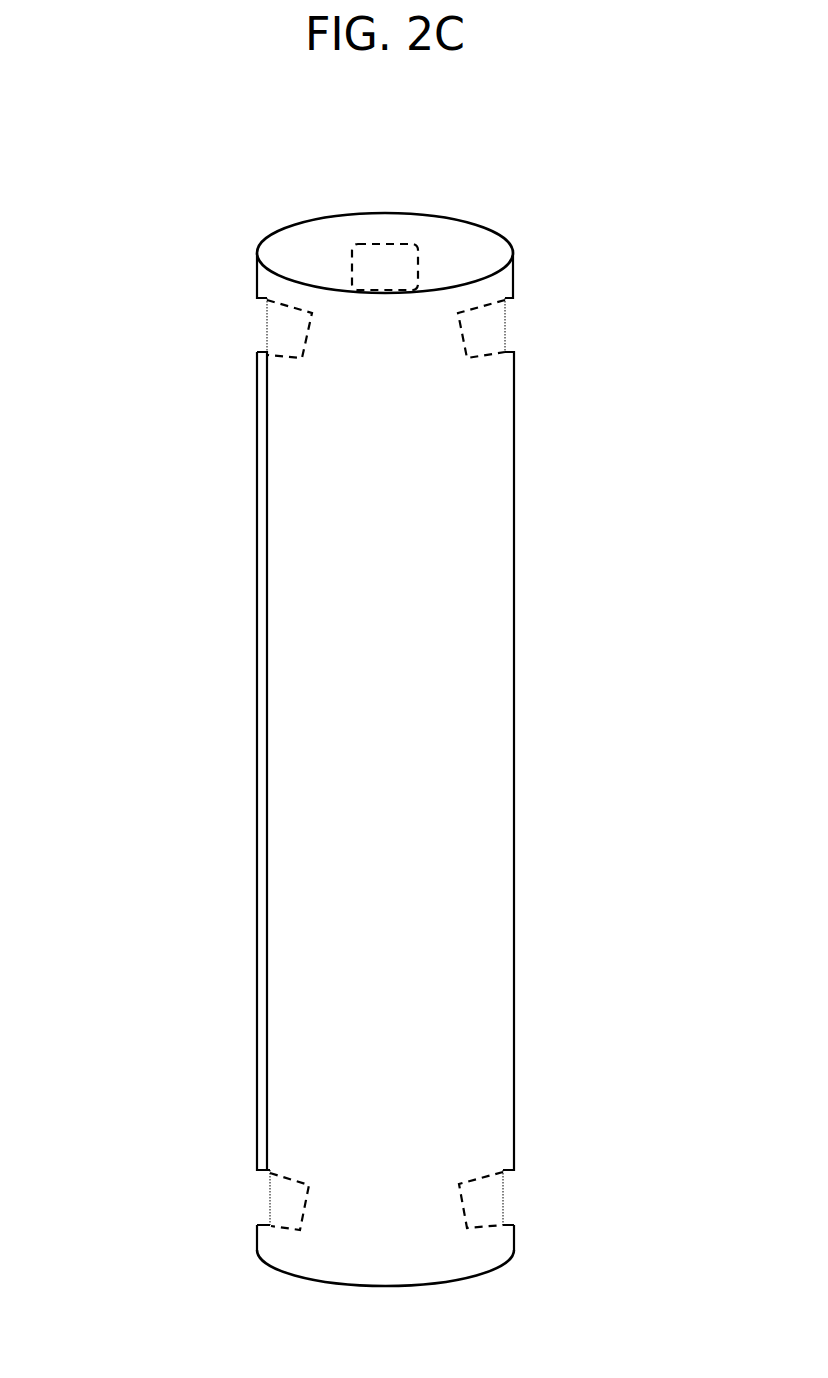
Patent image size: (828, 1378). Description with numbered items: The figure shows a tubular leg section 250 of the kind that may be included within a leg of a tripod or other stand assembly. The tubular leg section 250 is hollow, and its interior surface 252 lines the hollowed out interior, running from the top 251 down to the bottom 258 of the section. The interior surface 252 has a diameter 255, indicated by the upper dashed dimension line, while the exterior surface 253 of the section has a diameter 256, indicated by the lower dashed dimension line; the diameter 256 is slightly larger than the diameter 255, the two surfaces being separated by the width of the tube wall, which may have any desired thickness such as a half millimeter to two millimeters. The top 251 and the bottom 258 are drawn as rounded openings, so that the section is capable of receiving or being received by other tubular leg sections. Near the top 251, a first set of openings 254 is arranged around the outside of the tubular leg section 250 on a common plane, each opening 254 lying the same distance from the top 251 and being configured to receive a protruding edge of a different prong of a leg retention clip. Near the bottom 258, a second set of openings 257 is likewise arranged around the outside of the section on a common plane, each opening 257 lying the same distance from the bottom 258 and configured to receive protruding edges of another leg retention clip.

The tubular leg section 250 is at (80, 134).
The top 251 is at (385, 212).
The interior surface 252 is at (294, 247).
The exterior surface 253 is at (523, 451).
The first set of openings 254 is at (418, 273).
The diameter 255 is at (500, 527).
The diameter 256 is at (506, 576).
The second set of openings 257 is at (290, 1176).
The bottom 258 is at (278, 1266).